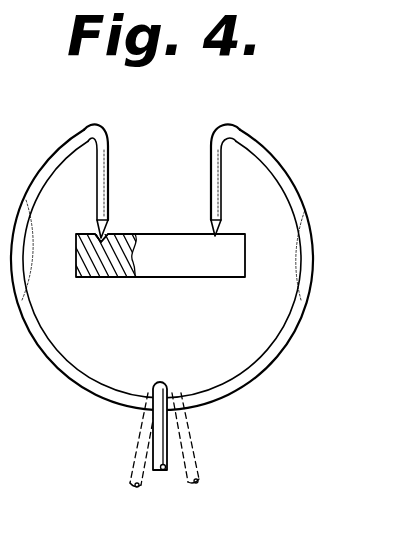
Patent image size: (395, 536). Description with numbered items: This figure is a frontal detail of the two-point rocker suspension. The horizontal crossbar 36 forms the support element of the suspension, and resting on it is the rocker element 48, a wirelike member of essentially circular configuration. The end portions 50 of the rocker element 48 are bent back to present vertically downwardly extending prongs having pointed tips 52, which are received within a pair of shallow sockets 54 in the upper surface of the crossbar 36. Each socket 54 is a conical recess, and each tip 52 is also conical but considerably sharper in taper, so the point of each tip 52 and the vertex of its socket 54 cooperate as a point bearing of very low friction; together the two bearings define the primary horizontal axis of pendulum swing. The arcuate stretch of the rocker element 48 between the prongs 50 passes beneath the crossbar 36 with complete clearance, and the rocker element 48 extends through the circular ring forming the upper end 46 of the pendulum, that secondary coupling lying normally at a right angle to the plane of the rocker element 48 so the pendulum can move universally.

The crossbar 36 is at (176, 280).
The upper end 46 is at (162, 442).
The rocker element 48 is at (53, 362).
The end portions 50 is at (97, 199).
The pointed tips 52 is at (97, 238).
The sockets 54 is at (107, 233).